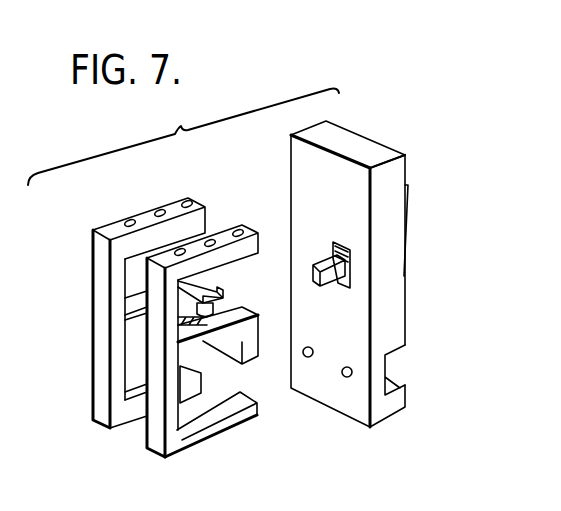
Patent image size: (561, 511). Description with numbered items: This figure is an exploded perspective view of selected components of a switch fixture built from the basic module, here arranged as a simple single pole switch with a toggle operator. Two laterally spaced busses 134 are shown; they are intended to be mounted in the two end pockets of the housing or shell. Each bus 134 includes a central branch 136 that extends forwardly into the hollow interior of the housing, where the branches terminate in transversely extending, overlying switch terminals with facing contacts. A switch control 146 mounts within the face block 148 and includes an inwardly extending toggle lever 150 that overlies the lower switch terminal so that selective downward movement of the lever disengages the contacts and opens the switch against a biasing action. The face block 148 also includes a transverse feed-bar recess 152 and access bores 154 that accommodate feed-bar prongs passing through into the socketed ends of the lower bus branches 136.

The bus 134 is at (138, 283).
The central branch 136 is at (190, 347).
The switch control 146 is at (414, 186).
The face block 148 is at (362, 137).
The toggle lever 150 is at (326, 260).
The feed-bar recess 152 is at (402, 369).
The access bores 154 is at (344, 367).